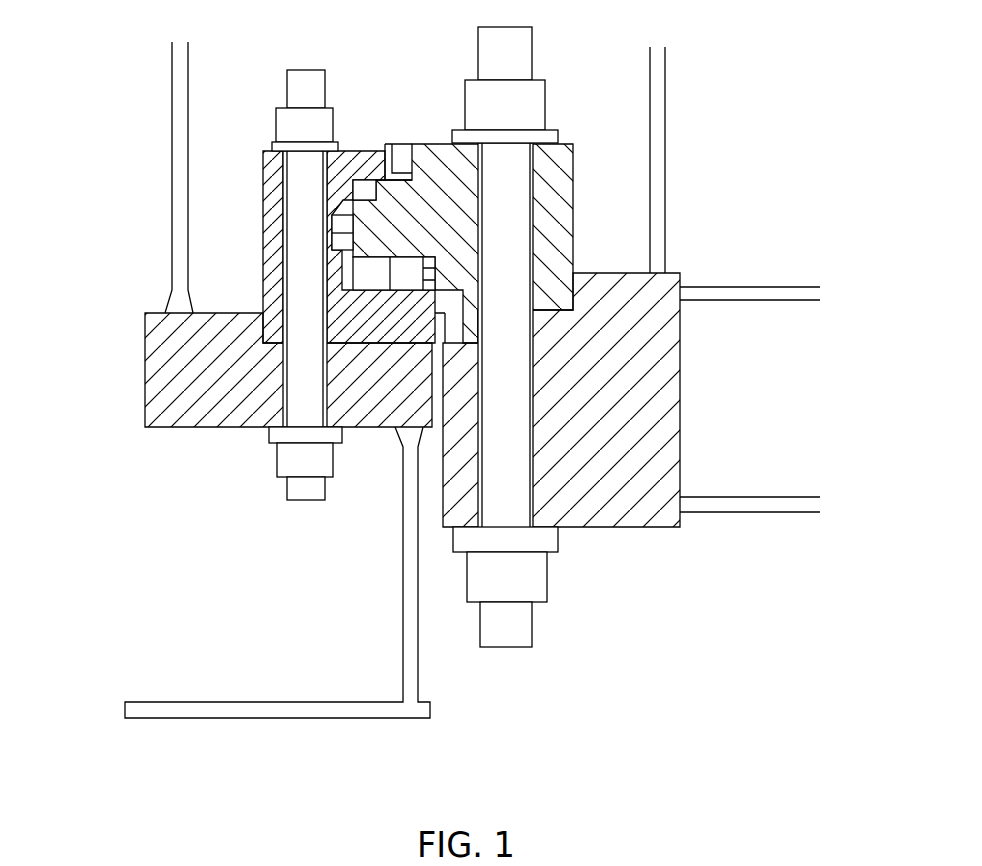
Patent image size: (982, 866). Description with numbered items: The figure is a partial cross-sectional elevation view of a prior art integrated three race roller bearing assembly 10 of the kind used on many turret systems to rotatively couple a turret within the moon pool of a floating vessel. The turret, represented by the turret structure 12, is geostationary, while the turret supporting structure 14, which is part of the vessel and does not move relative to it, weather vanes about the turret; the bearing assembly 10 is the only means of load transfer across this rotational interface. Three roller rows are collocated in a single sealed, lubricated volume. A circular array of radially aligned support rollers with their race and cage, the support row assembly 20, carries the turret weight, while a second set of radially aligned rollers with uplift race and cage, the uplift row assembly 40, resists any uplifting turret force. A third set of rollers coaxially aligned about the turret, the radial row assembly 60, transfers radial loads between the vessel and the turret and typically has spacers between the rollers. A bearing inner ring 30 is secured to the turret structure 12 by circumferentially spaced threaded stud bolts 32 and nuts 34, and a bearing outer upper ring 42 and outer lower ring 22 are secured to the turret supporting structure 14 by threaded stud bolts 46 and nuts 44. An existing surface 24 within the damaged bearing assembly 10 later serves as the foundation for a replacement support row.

The three race roller bearing assembly 10 is at (143, 70).
The turret structure 12 is at (673, 428).
The turret supporting structure 14 is at (153, 387).
The support row assembly 20 is at (414, 275).
The outer lower ring 22 is at (267, 284).
The existing surface 24 is at (283, 215).
The bearing inner ring 30 is at (572, 183).
The threaded stud bolts 32 is at (523, 627).
The nuts 34 is at (533, 100).
The uplift row assembly 40 is at (365, 186).
The outer upper ring 42 is at (251, 247).
The nuts 44 is at (290, 125).
The threaded stud bolts 46 is at (300, 490).
The radial row assembly 60 is at (343, 238).